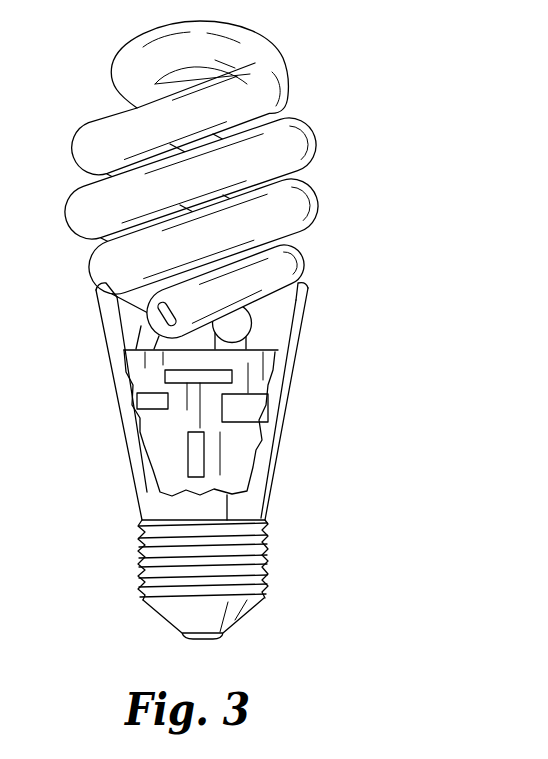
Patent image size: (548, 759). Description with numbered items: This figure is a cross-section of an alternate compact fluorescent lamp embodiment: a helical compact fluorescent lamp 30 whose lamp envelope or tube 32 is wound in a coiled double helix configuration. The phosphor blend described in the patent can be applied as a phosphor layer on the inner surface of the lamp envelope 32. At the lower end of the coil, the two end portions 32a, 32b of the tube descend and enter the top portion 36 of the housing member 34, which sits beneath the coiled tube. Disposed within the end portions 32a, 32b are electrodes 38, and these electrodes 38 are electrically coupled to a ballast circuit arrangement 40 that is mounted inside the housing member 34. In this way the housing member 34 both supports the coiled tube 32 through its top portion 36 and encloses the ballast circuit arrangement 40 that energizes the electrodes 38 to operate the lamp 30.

The helical compact fluorescent lamp 30 is at (240, 330).
The lamp envelope or tube 32 is at (202, 194).
The end portion 32a is at (150, 338).
The end portion 32b is at (236, 322).
The housing member 34 is at (233, 461).
The top portion 36 is at (310, 290).
The electrodes 38 is at (158, 311).
The ballast circuit arrangement 40 is at (137, 403).